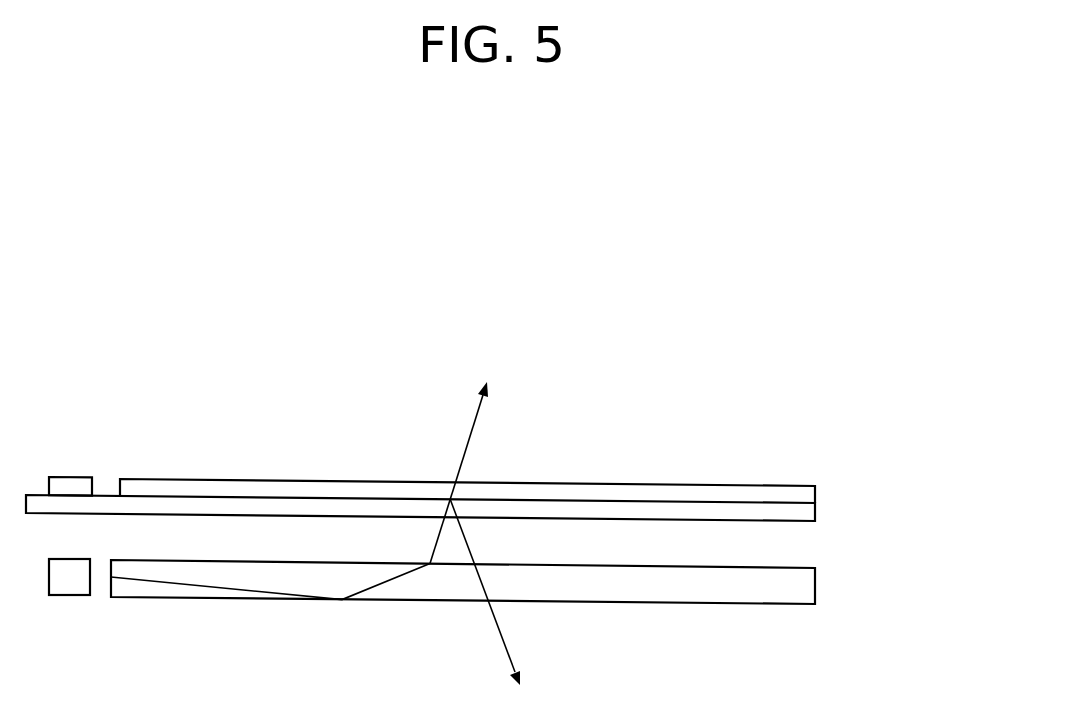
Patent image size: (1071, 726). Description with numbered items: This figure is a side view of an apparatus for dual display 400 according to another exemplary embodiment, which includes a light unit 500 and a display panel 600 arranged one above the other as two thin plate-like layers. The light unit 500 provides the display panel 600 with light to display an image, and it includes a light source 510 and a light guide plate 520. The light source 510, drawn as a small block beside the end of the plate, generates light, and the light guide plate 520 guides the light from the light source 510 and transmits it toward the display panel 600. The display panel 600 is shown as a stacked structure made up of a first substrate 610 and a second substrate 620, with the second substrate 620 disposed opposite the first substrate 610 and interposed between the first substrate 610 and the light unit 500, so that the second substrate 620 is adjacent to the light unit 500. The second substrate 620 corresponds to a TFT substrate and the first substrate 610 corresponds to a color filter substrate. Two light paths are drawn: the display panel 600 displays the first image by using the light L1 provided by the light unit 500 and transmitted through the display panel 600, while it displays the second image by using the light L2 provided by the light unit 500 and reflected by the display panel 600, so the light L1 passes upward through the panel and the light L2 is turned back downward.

The backlight assembly 400 is at (569, 287).
The light unit 500 is at (840, 584).
The light source 510 is at (73, 577).
The light guide plate 520 is at (683, 587).
The display panel 600 is at (840, 499).
The first substrate 610 is at (743, 493).
The second substrate 620 is at (675, 512).
The light L1 is at (465, 456).
The light L2 is at (492, 609).